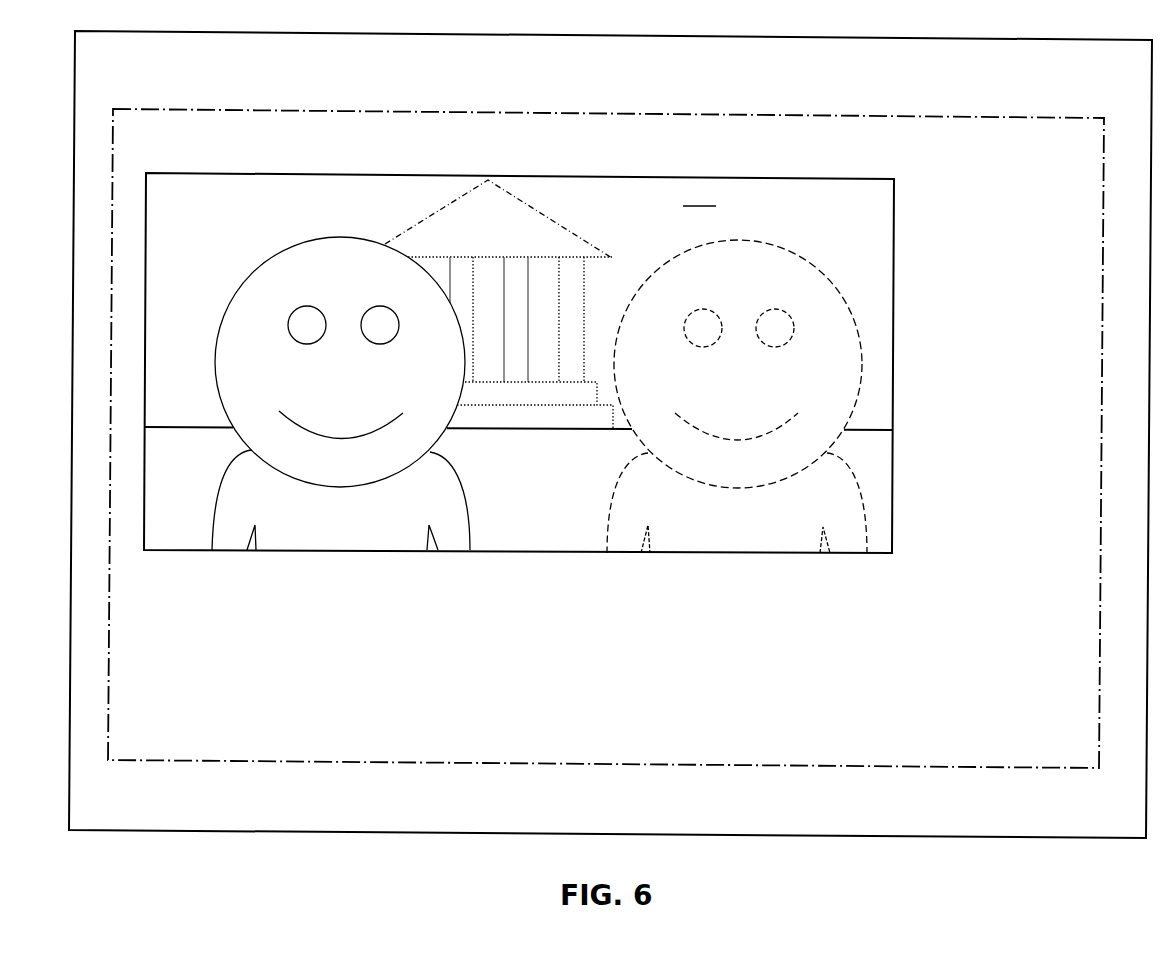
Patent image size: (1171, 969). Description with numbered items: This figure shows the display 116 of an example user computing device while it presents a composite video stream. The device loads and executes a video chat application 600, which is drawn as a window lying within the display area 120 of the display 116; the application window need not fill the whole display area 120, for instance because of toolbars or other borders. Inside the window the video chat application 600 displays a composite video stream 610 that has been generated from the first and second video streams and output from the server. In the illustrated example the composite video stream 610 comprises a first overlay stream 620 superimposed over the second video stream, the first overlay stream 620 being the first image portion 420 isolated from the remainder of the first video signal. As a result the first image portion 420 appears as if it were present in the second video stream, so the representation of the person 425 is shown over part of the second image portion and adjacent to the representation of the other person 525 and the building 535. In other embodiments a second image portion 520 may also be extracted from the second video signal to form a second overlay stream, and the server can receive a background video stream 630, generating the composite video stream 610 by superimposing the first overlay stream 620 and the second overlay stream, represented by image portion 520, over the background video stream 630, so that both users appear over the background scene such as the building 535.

The display 116 is at (1104, 838).
The display area 120 is at (607, 771).
The video chat application 600 is at (291, 163).
The composite video stream 610 is at (893, 260).
The building 535 is at (584, 240).
The representation of the person 525 is at (256, 274).
The image portion 520 is at (495, 508).
The first overlay stream 620 is at (872, 371).
The first image portion 420 is at (598, 530).
The representation of the person 425 is at (866, 522).
The background video stream 630 is at (699, 197).